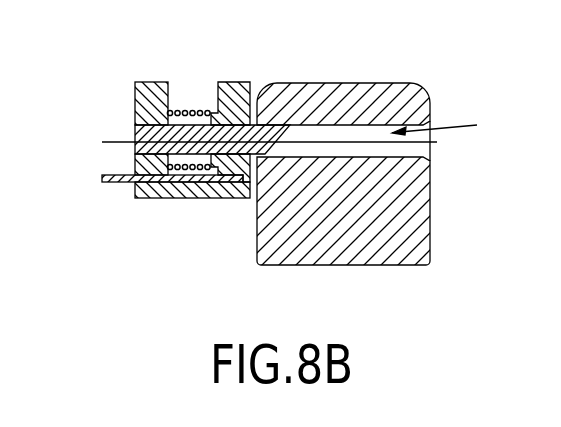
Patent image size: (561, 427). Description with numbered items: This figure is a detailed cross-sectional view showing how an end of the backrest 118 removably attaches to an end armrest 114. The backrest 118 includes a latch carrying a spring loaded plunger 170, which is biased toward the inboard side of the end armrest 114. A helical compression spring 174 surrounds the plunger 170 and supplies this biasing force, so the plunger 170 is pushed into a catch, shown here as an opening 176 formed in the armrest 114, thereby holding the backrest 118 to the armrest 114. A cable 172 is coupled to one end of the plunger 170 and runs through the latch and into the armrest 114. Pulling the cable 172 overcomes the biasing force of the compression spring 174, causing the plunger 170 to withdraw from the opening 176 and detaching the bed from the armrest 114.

The end armrest 114 is at (345, 102).
The backrest 118 is at (152, 93).
The spring loaded plunger 170 is at (143, 132).
The cable 172 is at (120, 142).
The helical compression spring 174 is at (180, 110).
The opening 176 is at (455, 126).